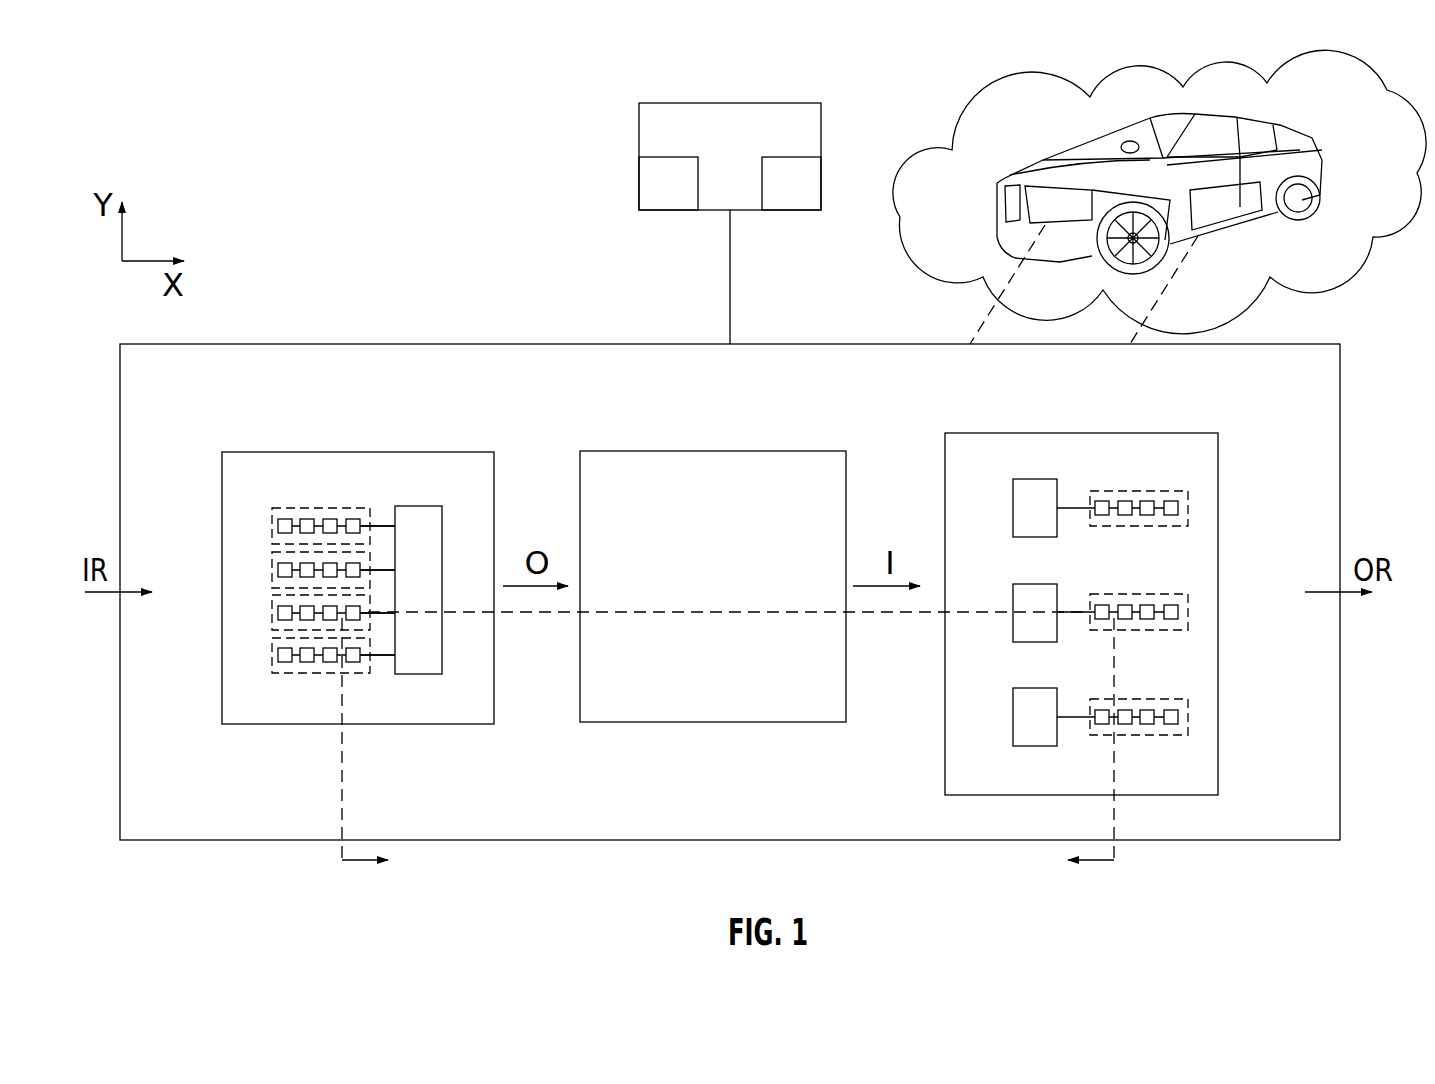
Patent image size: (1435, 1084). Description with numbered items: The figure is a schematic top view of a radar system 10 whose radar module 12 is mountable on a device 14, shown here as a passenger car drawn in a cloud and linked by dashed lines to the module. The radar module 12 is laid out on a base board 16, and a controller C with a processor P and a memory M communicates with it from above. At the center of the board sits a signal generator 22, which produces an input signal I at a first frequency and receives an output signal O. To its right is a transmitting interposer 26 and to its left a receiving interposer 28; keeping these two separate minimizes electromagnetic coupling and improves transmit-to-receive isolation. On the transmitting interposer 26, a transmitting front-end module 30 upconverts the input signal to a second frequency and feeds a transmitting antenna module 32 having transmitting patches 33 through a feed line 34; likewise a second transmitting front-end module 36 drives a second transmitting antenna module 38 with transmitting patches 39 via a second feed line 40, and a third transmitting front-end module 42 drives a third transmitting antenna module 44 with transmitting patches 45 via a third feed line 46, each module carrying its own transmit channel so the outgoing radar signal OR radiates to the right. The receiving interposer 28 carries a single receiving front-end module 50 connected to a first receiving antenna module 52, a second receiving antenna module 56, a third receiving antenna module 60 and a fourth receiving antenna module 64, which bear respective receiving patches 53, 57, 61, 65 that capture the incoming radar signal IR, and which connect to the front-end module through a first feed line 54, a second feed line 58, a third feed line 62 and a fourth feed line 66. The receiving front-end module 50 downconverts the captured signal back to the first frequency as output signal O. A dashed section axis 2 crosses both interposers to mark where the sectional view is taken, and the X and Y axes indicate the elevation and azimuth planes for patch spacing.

The axis 2- 2 is at (728, 750).
The radar system 10 is at (319, 253).
The radar module 12 is at (774, 316).
The device 14 is at (1313, 127).
The base board 16 is at (706, 803).
The signal generator 22 is at (715, 450).
The transmitting interposer 26 is at (1234, 468).
The receiving interposer 28 is at (359, 449).
The transmitting front-end module 30 is at (1035, 479).
The transmitting antenna module 32 is at (1143, 491).
The transmitting patches 33 is at (1124, 499).
The feed line 34 is at (1084, 507).
The second transmitting front-end module 36 is at (1035, 642).
The second transmitting antenna module 38 is at (1157, 594).
The transmitting patches 39 is at (1103, 603).
The second feed line 40 is at (1084, 611).
The third transmitting front-end module 42 is at (1035, 746).
The third transmitting antenna module 44 is at (1132, 737).
The transmitting patches 45 is at (1103, 709).
The third feed line 46 is at (1085, 720).
The receiving front-end module 50 is at (420, 506).
The first receiving antenna module 52 is at (327, 508).
The receiving patches 53 is at (353, 517).
The first feed line 54 is at (390, 526).
The second receiving antenna module 56 is at (273, 570).
The receiving patches 57 is at (307, 563).
The second feed line 58 is at (380, 569).
The third receiving antenna module 60 is at (273, 612).
The receiving patches 61 is at (355, 620).
The third feed line 62 is at (380, 612).
The fourth receiving antenna module 64 is at (273, 655).
The receiving patches 65 is at (285, 665).
The fourth feed line 66 is at (372, 657).